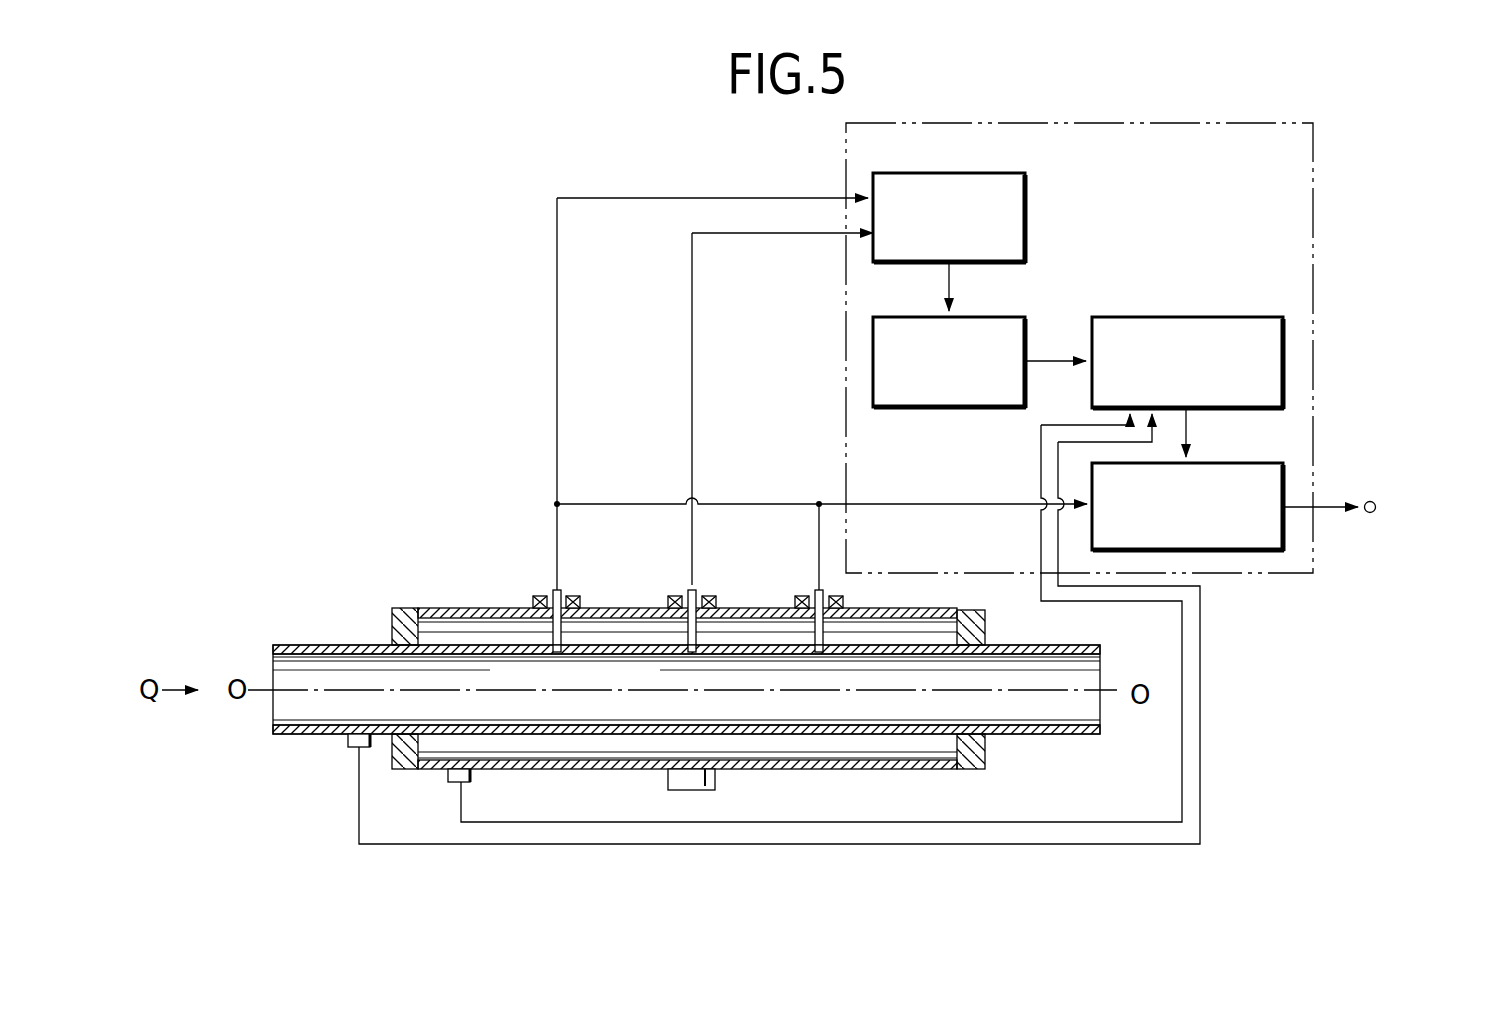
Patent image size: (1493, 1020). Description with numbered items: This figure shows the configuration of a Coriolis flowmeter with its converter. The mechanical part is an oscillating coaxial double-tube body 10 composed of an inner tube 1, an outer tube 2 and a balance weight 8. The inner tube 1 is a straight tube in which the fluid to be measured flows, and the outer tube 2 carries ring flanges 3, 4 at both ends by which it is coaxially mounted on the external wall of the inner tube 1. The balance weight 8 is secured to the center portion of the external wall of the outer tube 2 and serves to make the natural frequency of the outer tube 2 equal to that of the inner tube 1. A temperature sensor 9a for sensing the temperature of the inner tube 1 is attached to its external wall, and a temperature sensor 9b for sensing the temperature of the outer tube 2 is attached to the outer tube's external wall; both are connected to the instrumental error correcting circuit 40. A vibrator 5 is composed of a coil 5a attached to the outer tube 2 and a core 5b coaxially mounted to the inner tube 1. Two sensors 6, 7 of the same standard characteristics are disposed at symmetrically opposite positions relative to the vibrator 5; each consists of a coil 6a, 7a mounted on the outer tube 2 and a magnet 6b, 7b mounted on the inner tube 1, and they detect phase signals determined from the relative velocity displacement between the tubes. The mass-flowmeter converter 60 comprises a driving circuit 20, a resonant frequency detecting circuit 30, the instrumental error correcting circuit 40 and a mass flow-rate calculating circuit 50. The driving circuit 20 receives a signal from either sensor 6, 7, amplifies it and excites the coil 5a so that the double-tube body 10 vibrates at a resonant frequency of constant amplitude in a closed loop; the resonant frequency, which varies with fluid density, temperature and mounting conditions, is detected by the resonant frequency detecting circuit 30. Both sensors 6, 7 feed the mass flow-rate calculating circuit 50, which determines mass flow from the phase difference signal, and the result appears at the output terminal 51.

The inner tube 1 is at (333, 662).
The outer tube 2 is at (893, 771).
The ring flange 3 is at (392, 765).
The ring flange 4 is at (985, 760).
The vibrator 5 is at (667, 588).
The coil 5a is at (716, 598).
The core 5b is at (697, 648).
The sensor 6 is at (533, 588).
The coil 6a is at (583, 598).
The magnet 6b is at (561, 648).
The sensor 7 is at (804, 588).
The coil 7a is at (843, 600).
The magnet 7b is at (824, 648).
The balance weight 8 is at (717, 793).
The temperature sensor 9a is at (350, 748).
The temperature sensor 9b is at (470, 782).
The oscillating coaxial double-tube body 10 is at (428, 545).
The driving circuit 20 is at (1026, 173).
The resonant frequency detecting circuit 30 is at (1014, 317).
The instrumental error correcting circuit 40 is at (1249, 317).
The mass flow-rate calculating circuit 50 is at (1244, 463).
The output terminal 51 is at (1370, 513).
The mass-flowmeter converter 60 is at (1199, 122).